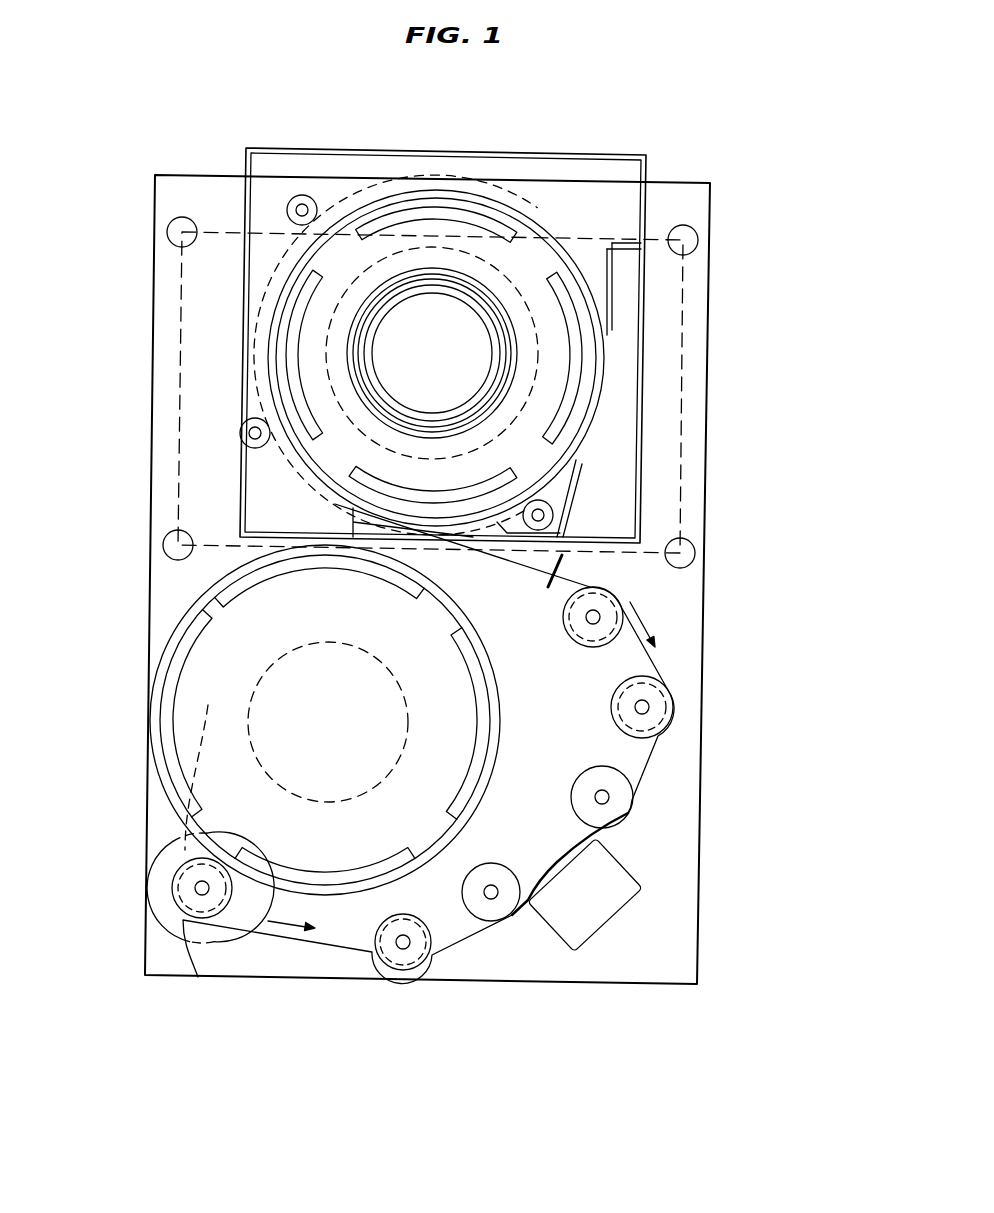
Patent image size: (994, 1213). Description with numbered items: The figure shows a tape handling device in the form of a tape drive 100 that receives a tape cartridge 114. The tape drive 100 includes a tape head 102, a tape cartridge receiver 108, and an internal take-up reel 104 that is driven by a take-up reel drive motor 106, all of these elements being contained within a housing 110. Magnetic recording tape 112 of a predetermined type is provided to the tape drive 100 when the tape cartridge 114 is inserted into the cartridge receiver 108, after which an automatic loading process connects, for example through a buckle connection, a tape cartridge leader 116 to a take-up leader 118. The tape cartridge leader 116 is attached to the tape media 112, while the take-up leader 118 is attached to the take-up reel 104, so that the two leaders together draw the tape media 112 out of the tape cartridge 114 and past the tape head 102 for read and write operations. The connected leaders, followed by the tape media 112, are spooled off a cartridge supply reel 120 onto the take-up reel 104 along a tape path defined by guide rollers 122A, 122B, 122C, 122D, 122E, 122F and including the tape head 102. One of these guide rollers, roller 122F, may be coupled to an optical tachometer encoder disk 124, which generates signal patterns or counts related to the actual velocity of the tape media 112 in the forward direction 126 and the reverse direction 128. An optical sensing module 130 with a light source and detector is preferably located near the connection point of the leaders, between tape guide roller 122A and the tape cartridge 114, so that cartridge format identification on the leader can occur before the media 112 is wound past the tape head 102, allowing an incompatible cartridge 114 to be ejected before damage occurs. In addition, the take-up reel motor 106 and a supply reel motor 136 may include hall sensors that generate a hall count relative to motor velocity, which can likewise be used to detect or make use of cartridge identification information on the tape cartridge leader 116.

The tape drive 100 is at (118, 997).
The tape head 102 is at (635, 866).
The take-up reel 104 is at (212, 607).
The take-up reel drive motor 106 is at (273, 658).
The tape cartridge receiver 108 is at (200, 420).
The housing 110 is at (164, 470).
The magnetic recording tape 112 is at (300, 353).
The tape cartridge 114 is at (248, 156).
The tape cartridge leader 116 is at (497, 555).
The take-up leader 118 is at (650, 660).
The cartridge supply reel 120 is at (352, 272).
The guide roller 122A is at (563, 625).
The guide roller 122B is at (673, 703).
The guide roller 122C is at (628, 813).
The guide roller 122D is at (510, 863).
The guide roller 122E is at (376, 968).
The guide roller 122F is at (190, 918).
The optical tachometer encoder disk 124 is at (162, 850).
The forward direction 126 is at (647, 620).
The reverse direction 128 is at (302, 930).
The optical sensing module 130 is at (574, 564).
The supply reel motor 136 is at (258, 300).